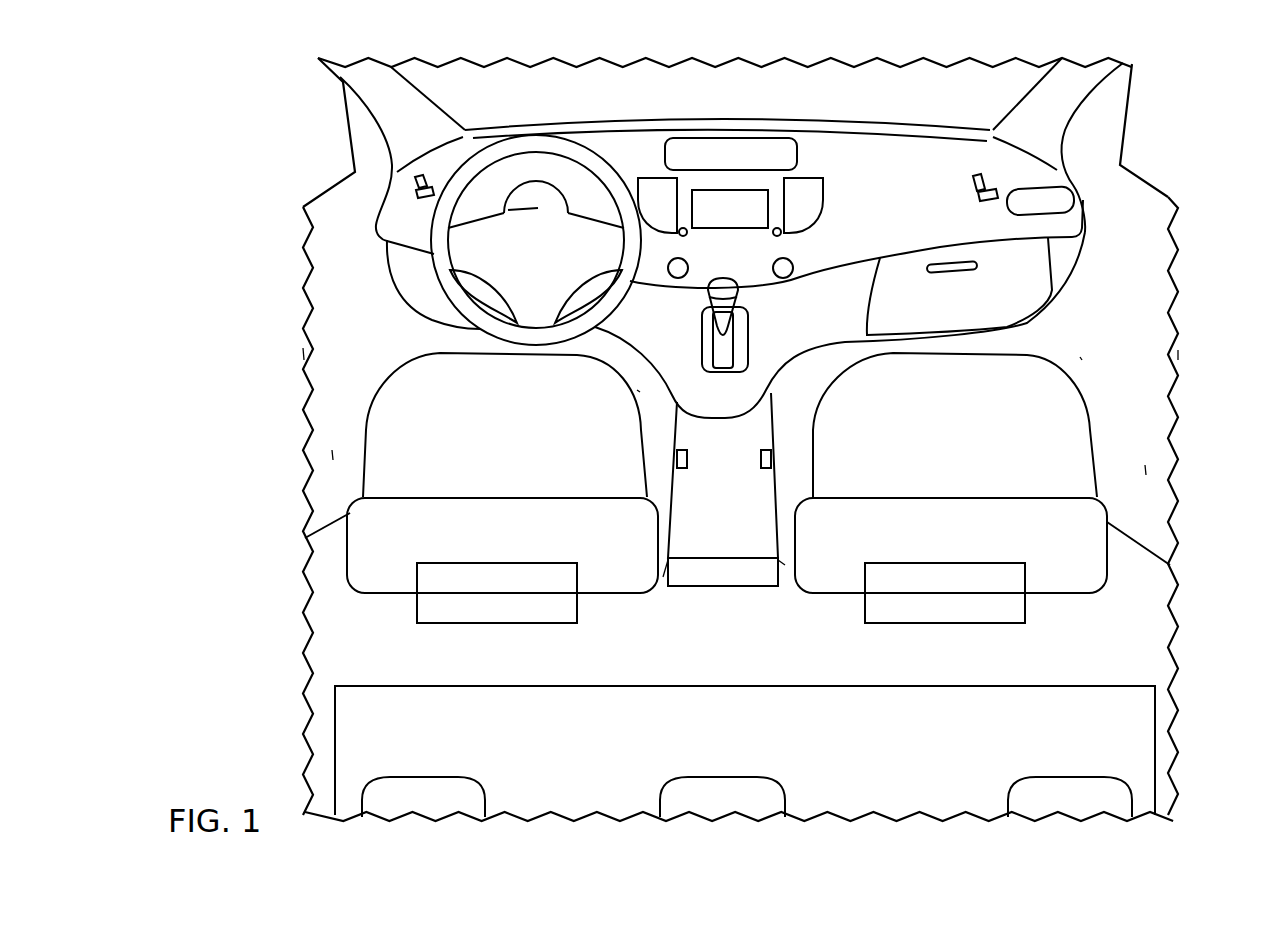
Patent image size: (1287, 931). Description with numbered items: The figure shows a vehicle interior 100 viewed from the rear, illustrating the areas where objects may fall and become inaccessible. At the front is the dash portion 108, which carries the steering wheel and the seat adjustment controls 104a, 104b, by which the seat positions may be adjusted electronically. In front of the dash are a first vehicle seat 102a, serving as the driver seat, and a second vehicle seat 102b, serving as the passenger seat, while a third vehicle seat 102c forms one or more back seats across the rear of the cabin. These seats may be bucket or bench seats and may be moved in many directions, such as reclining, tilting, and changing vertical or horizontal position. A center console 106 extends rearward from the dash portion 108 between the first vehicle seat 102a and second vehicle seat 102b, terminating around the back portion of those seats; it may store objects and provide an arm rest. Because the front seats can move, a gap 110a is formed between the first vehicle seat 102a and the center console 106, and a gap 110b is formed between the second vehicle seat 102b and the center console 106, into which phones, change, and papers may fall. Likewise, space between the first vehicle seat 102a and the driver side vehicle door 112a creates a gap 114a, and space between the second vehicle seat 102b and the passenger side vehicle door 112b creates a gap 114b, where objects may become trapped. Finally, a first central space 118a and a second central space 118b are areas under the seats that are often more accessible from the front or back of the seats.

The vehicle interior 100 is at (290, 157).
The first vehicle seat 102a is at (518, 546).
The second vehicle seat 102b is at (970, 542).
The third vehicle seat 102c is at (590, 755).
The seat adjustment control 104a is at (402, 210).
The seat adjustment control 104b is at (1000, 170).
The center console 106 is at (741, 504).
The dash portion 108 is at (855, 144).
The gap 110a is at (660, 588).
The gap 110b is at (788, 576).
The vehicle door 112a is at (269, 336).
The vehicle door 112b is at (1208, 340).
The gap 114a is at (333, 437).
The gap 114b is at (1144, 452).
The first central space 118a is at (644, 398).
The second central space 118b is at (1083, 346).